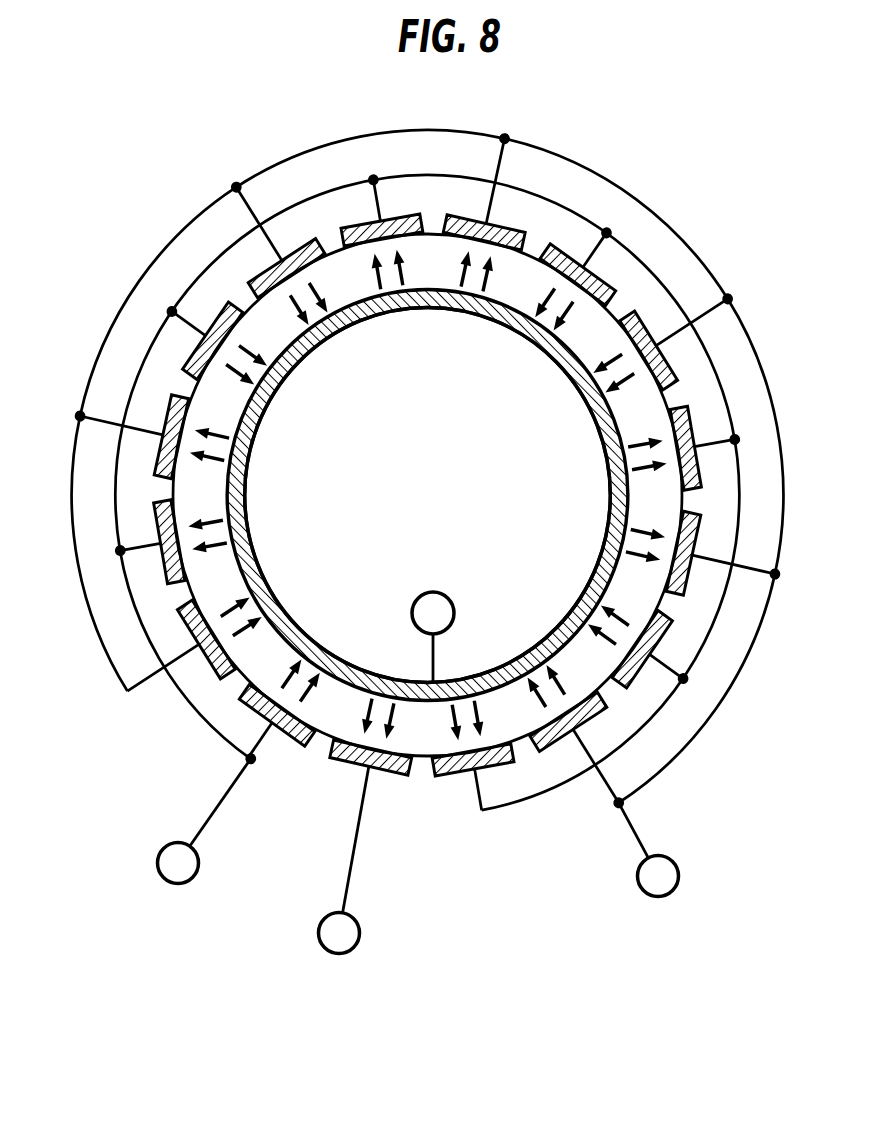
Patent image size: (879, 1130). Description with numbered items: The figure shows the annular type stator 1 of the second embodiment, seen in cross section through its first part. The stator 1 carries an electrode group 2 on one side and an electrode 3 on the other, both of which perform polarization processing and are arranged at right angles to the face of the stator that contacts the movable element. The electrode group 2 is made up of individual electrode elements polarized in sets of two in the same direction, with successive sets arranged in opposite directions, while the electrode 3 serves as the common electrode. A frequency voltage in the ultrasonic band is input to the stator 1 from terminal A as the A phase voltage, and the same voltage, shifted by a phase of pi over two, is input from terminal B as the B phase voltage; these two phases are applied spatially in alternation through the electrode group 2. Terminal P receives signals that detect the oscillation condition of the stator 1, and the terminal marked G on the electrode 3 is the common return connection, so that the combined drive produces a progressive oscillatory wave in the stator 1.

The stator 1 is at (630, 583).
The electrode group 2 is at (612, 280).
The electrode 3 is at (592, 420).
The terminal A is at (204, 821).
The terminal B is at (649, 850).
The terminal P is at (344, 859).
The ground terminal G is at (433, 637).